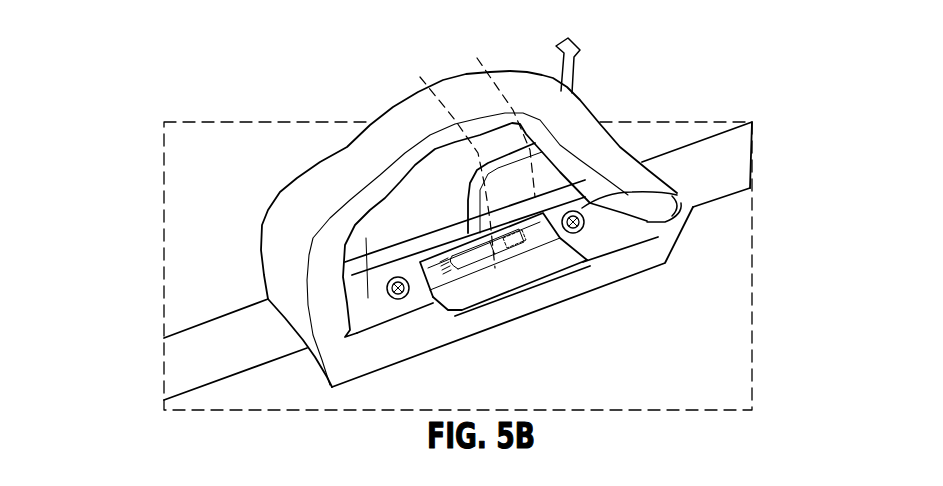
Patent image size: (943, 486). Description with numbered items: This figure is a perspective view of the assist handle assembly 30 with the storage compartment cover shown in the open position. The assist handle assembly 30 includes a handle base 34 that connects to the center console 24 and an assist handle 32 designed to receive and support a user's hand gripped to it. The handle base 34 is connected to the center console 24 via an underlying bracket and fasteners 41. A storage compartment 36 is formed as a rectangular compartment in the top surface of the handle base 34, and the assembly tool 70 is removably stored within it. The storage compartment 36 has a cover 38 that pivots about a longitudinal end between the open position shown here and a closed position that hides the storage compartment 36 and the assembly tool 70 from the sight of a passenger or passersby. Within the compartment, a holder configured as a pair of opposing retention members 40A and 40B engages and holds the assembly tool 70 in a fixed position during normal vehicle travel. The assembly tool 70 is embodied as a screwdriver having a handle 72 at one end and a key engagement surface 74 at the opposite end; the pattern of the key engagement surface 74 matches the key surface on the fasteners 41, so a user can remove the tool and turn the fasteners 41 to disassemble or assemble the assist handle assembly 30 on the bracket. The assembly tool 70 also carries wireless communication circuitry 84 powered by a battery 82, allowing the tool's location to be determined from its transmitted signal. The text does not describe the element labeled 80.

The center console 24 is at (197, 253).
The assist handle assembly 30 is at (602, 84).
The assist handle 32 is at (357, 157).
The handle base 34 is at (306, 240).
The storage compartment 36 is at (540, 256).
The cover 38 is at (583, 256).
The retention member 40A is at (500, 257).
The retention member 40B is at (442, 157).
The fasteners 41 is at (700, 205).
The assembly tool 70 is at (392, 110).
The handle 72 is at (425, 268).
The key engagement surface 74 is at (576, 163).
The direction arrow 80 is at (570, 73).
The battery 82 is at (421, 79).
The wireless communication circuitry 84 is at (478, 60).